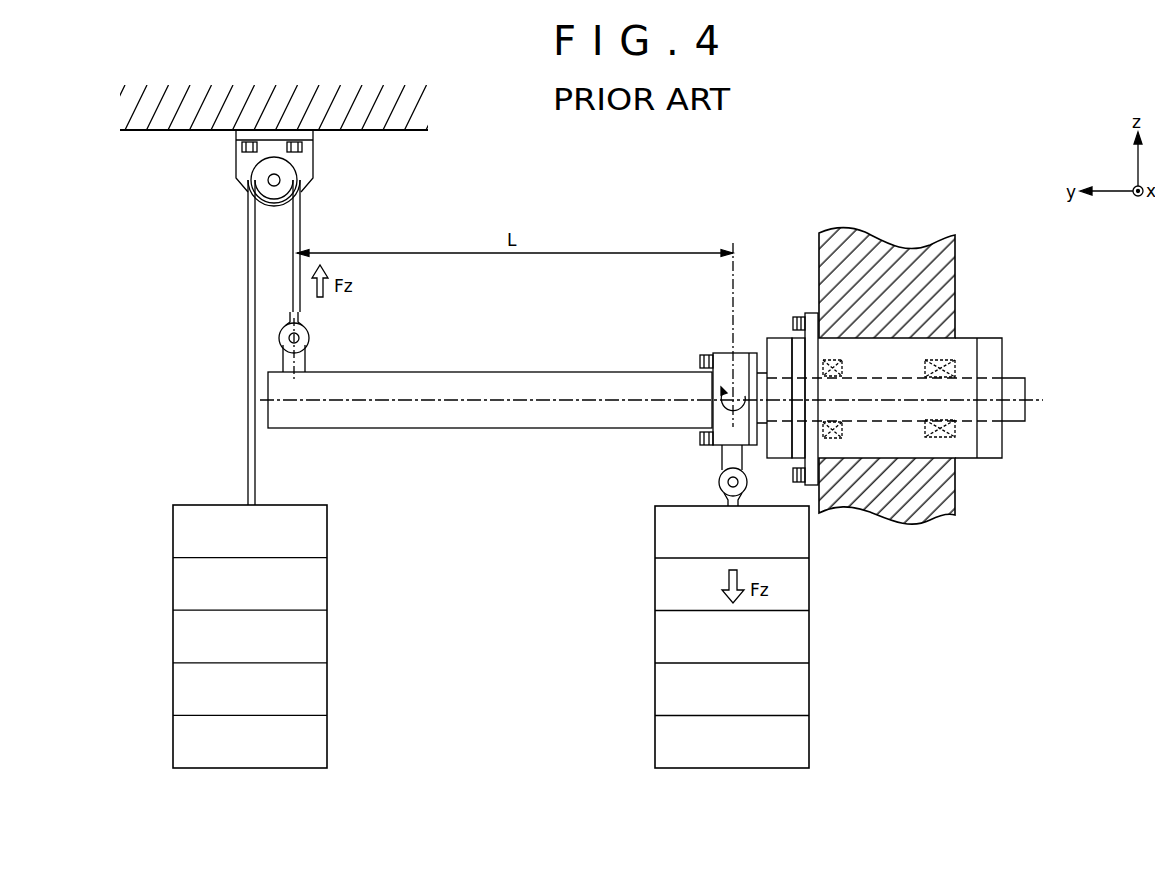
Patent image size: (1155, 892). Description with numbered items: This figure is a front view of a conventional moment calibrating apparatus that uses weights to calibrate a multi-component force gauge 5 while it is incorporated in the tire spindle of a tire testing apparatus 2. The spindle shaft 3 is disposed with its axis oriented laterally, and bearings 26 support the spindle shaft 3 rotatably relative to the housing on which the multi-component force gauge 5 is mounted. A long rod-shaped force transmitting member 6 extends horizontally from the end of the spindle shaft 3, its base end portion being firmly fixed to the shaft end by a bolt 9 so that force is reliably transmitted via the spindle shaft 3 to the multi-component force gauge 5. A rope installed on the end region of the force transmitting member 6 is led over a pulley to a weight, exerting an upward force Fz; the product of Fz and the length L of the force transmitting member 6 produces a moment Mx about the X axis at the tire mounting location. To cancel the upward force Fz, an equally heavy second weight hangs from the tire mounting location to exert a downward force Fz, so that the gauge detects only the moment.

The tire testing apparatus 2 is at (1004, 306).
The spindle shaft 3 is at (1017, 418).
The multi-component force gauge 5 is at (778, 338).
The force transmitting member 6 is at (507, 418).
The bolt 9 is at (707, 353).
The bearings 26 is at (958, 365).